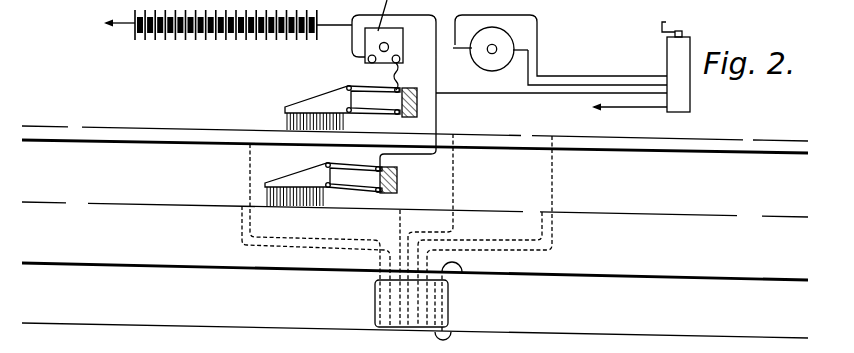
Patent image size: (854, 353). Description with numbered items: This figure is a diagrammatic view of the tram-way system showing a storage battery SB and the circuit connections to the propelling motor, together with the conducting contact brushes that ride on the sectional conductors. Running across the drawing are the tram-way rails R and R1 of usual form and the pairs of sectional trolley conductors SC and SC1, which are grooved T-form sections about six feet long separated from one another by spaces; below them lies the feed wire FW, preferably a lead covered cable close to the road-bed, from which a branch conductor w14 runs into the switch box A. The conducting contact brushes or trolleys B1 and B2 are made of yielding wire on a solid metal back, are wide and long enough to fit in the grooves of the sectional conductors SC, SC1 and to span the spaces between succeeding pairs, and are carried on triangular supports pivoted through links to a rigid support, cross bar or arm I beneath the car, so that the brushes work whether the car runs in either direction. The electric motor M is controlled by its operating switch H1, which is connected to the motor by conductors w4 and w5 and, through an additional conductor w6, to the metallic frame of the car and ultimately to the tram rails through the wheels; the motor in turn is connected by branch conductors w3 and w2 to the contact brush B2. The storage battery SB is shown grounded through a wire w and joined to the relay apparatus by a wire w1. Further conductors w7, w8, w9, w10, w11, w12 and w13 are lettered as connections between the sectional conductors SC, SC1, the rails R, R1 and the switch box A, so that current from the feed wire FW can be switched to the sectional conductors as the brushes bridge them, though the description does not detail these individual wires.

The storage battery SB is at (226, 41).
The sectional trolley conductor SC is at (157, 119).
The tram-way rail R is at (113, 143).
The sectional trolley conductor SC1 is at (136, 207).
The tram-way rail R1 is at (97, 268).
The feed wire FW is at (181, 315).
The conducting contact brush B1 is at (285, 112).
The conducting contact brush B2 is at (281, 176).
The rigid support I is at (415, 117).
The electric motor M is at (500, 33).
The operating switch H1 is at (688, 66).
The switch box A is at (448, 300).
The ground wire w is at (118, 27).
The wire w1 is at (393, 78).
The branch conductor w2 is at (436, 118).
The branch conductor w3 is at (551, 105).
The conductor w4 is at (526, 83).
The conductor w5 is at (612, 68).
The conductor w6 is at (639, 107).
The wire w7 is at (314, 247).
The wire w8 is at (306, 232).
The wire w9 is at (398, 227).
The wire w10 is at (454, 176).
The wire w11 is at (544, 227).
The wire w12 is at (553, 227).
The wire w13 is at (463, 266).
The branch conductor w14 is at (452, 338).